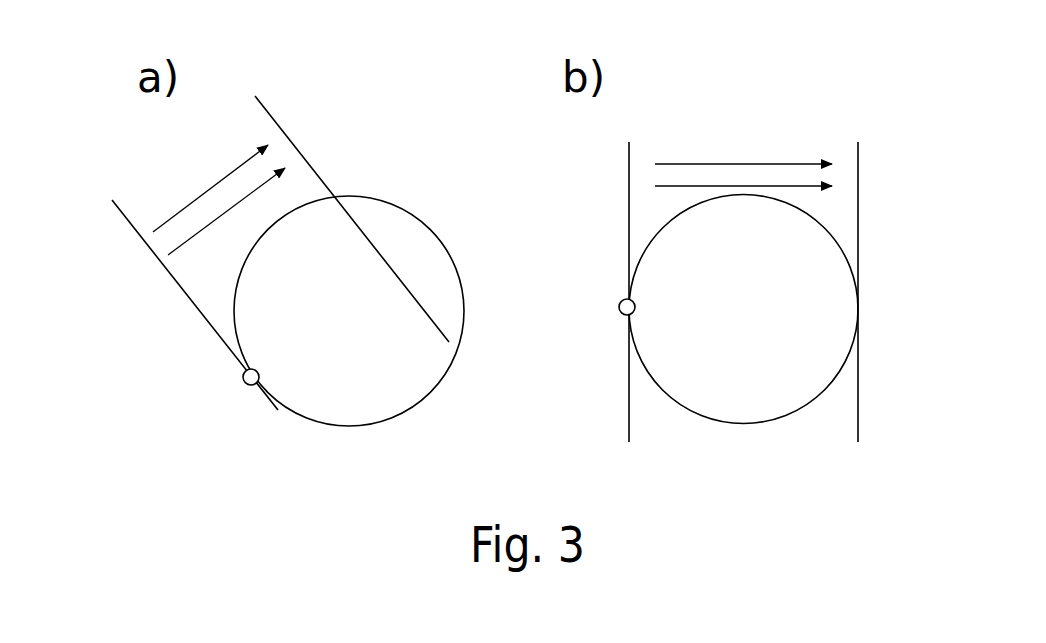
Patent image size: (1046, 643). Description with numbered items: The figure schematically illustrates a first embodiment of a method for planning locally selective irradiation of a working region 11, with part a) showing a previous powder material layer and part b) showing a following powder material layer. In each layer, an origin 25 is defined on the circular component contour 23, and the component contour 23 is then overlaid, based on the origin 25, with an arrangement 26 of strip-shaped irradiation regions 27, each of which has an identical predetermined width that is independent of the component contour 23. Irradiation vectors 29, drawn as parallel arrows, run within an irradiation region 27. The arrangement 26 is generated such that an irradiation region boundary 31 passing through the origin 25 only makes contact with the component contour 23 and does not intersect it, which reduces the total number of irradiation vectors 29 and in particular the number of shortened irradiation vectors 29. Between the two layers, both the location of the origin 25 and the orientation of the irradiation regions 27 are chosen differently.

The working region 11 is at (381, 121).
The component contour 23 is at (443, 378).
The origin 25 is at (244, 382).
The arrangement of irradiation regions 26 is at (278, 94).
The irradiation region 27 is at (214, 166).
The irradiation vector 29 is at (183, 211).
The irradiation region boundary 31 is at (118, 208).